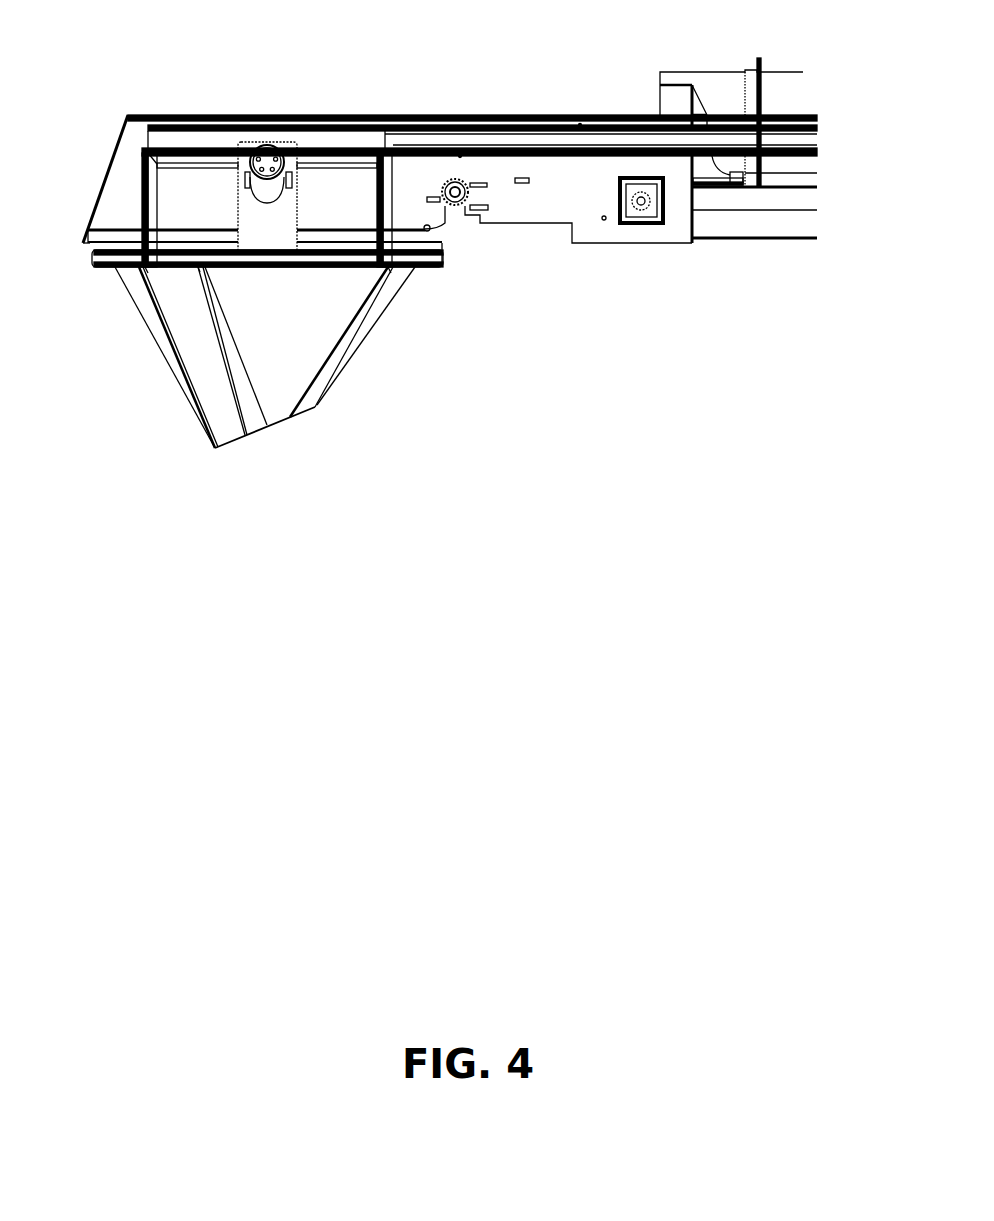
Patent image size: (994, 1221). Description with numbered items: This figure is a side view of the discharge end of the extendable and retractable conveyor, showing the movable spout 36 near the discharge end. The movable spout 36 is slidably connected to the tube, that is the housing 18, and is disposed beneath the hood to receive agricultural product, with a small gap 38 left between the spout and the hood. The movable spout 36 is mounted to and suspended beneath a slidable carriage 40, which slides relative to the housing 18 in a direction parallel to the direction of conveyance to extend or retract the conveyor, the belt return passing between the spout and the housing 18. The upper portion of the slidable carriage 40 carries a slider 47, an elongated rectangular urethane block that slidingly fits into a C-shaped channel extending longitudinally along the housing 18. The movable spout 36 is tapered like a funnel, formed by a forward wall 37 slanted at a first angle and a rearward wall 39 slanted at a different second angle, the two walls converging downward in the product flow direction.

The housing 18 is at (703, 220).
The movable spout 36 is at (292, 342).
The forward wall 37 is at (160, 335).
The gap 38 is at (437, 241).
The rearward wall 39 is at (380, 320).
The slidable carriage 40 is at (147, 198).
The slider 47 is at (312, 140).